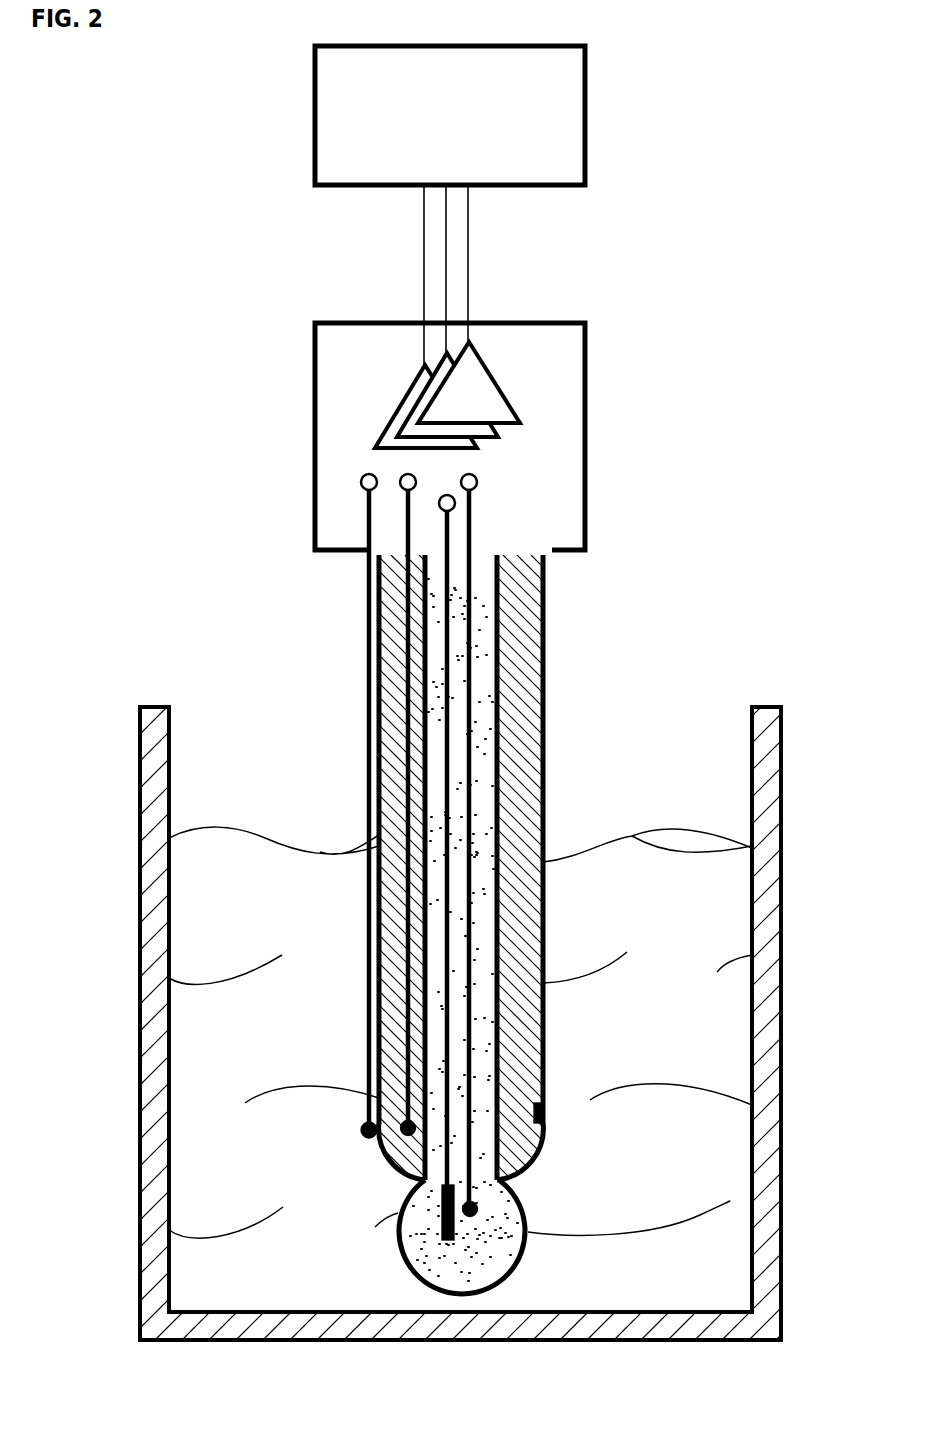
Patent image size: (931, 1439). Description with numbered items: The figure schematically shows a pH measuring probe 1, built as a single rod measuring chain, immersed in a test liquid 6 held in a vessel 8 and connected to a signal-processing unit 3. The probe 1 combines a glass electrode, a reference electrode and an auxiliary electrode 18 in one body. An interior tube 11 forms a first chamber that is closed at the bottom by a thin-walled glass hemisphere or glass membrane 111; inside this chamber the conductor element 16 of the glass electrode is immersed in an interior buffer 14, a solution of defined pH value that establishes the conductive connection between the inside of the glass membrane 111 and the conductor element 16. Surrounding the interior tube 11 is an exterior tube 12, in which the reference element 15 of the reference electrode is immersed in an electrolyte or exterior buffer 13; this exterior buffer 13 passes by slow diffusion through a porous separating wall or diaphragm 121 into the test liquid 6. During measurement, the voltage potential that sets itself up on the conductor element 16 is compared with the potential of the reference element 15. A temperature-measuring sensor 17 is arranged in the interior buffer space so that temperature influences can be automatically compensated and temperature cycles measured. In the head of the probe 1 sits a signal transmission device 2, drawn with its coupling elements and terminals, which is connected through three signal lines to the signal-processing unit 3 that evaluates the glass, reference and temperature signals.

The measuring probe 1 is at (262, 496).
The signal transmission device 2 is at (450, 436).
The signal-processing unit 3 is at (450, 115).
The test liquid 6 is at (673, 982).
The container 8 is at (782, 948).
The interior tube 11 is at (500, 640).
The exterior tube 12 is at (535, 658).
The exterior buffer 13 is at (525, 707).
The interior buffer 14 is at (480, 728).
The reference element 15 is at (405, 787).
The conductor element 16 is at (477, 783).
The temperature-measuring sensor 17 is at (440, 1228).
The auxiliary electrode 18 is at (366, 657).
The glass membrane 111 is at (533, 1222).
The diaphragm 121 is at (545, 1103).